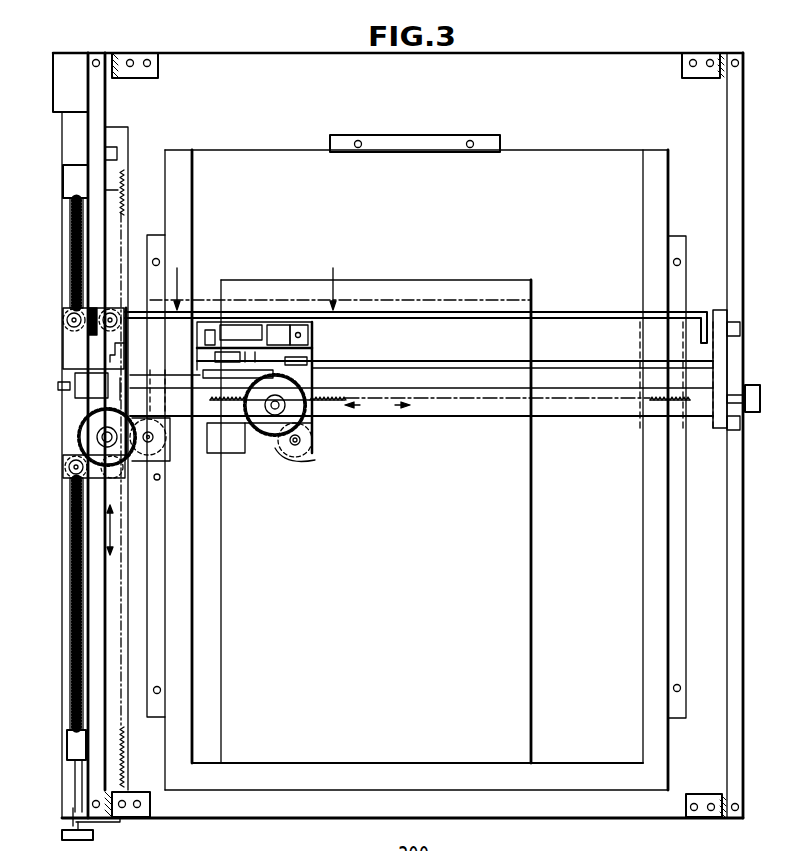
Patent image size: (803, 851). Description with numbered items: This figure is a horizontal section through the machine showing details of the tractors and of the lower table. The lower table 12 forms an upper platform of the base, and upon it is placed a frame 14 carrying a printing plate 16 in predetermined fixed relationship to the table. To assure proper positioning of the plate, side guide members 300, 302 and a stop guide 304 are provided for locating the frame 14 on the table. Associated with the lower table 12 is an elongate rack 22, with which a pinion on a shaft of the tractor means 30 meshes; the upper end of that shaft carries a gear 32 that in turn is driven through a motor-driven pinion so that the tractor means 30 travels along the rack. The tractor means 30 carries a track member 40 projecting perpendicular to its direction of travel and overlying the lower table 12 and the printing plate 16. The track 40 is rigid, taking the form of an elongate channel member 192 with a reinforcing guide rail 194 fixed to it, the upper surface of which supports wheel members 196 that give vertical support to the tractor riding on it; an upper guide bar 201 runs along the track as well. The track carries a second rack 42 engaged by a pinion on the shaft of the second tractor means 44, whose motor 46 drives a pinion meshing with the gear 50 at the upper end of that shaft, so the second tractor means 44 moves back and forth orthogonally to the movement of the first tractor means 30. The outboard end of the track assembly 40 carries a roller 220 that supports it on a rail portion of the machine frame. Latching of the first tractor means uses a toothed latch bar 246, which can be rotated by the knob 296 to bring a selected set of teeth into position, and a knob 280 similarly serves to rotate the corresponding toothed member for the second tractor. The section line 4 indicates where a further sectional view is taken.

The lower table 12 is at (427, 94).
The frame 14 is at (558, 172).
The printing plate 16 is at (384, 633).
The elongate rack 22 is at (124, 218).
The tractor means 30 is at (143, 468).
The gear 32 is at (88, 440).
The track member 40 is at (490, 418).
The second rack 42 is at (345, 396).
The second tractor means 44 is at (262, 440).
The motor 46 is at (290, 458).
The gear 50 is at (297, 408).
The elongate channel member 192 is at (612, 405).
The guide rail 194 is at (482, 362).
The wheel members 196 is at (300, 362).
The upper guide bar 201 is at (592, 312).
The roller 220 is at (735, 428).
The latch bar 246 is at (75, 651).
The knob 280 is at (752, 385).
The knob 296 is at (85, 838).
The side guide member 300 is at (159, 238).
The side guide member 302 is at (674, 247).
The stop guide 304 is at (455, 142).
The section line 4- 4 is at (340, 274).